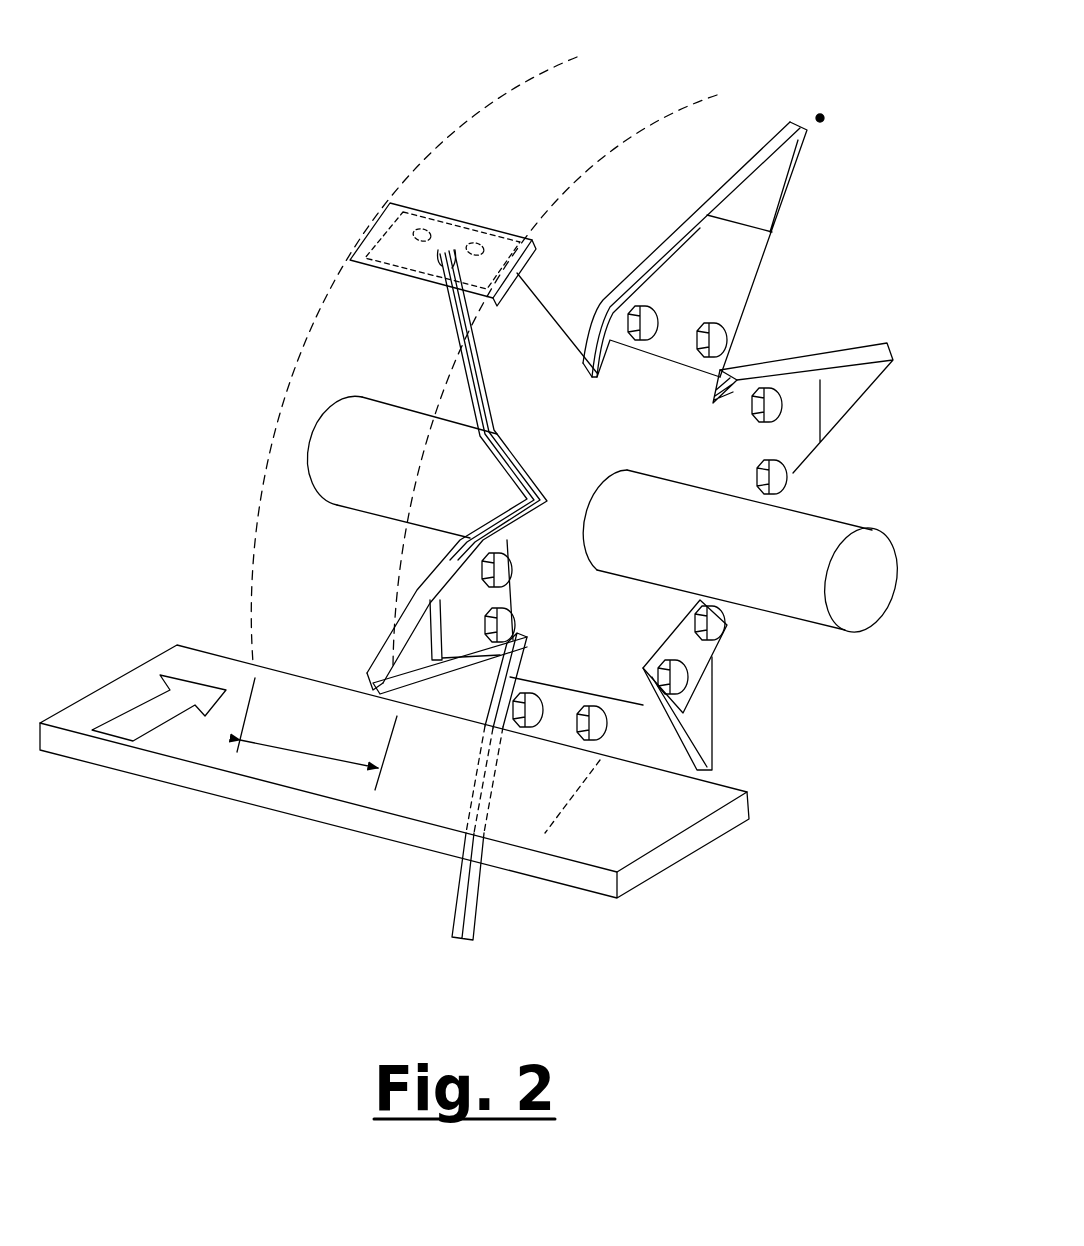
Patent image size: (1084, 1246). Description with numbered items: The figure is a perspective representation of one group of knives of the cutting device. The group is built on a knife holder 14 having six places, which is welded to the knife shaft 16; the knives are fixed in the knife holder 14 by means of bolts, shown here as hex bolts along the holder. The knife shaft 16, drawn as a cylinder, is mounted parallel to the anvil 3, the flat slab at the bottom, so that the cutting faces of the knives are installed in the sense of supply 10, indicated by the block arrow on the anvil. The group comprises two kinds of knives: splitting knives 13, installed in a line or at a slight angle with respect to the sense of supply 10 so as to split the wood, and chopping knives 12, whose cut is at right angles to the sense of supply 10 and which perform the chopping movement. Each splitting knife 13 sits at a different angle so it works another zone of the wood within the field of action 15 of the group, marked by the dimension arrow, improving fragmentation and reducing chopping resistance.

The anvil 3 is at (755, 810).
The sense of supply 10 is at (137, 751).
The chopping knife 12 is at (372, 232).
The splitting knife 13 is at (822, 116).
The knife holder 14 is at (762, 289).
The field of action 15 is at (301, 754).
The knife shaft 16 is at (318, 453).